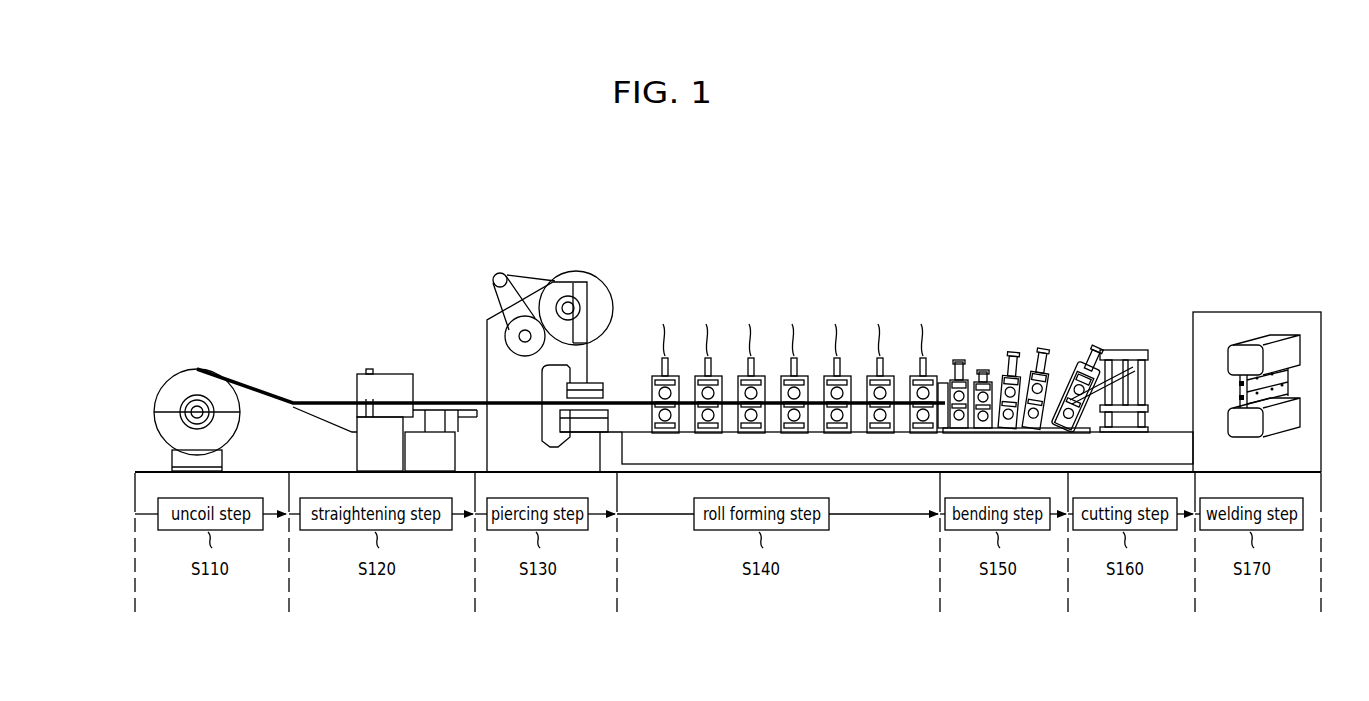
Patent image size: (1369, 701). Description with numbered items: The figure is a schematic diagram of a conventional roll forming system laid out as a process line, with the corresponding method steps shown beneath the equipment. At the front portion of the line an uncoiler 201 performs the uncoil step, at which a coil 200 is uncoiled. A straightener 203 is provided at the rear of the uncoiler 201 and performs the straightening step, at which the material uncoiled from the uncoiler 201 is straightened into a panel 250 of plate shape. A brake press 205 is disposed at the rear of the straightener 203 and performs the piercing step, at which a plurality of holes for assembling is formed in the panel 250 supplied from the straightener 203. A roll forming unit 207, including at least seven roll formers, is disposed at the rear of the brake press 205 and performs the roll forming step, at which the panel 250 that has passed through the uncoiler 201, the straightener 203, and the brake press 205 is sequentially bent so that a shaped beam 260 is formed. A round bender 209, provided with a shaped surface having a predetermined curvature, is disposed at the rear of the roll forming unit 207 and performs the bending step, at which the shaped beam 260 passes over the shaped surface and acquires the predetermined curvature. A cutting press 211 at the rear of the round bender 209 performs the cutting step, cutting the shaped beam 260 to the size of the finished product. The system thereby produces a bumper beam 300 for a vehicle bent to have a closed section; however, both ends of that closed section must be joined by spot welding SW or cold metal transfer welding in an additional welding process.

The coil 200 is at (241, 378).
The uncoiler 201 is at (203, 393).
The straightener 203 is at (386, 372).
The brake press 205 is at (553, 271).
The roll forming unit 207 is at (790, 284).
The round bender 209 is at (1005, 336).
The cutting press 211 is at (1130, 341).
The panel 250 is at (448, 400).
The shaped beam 260 is at (946, 382).
The bumper beam 300 is at (1234, 369).
The spot welding SW is at (1240, 398).